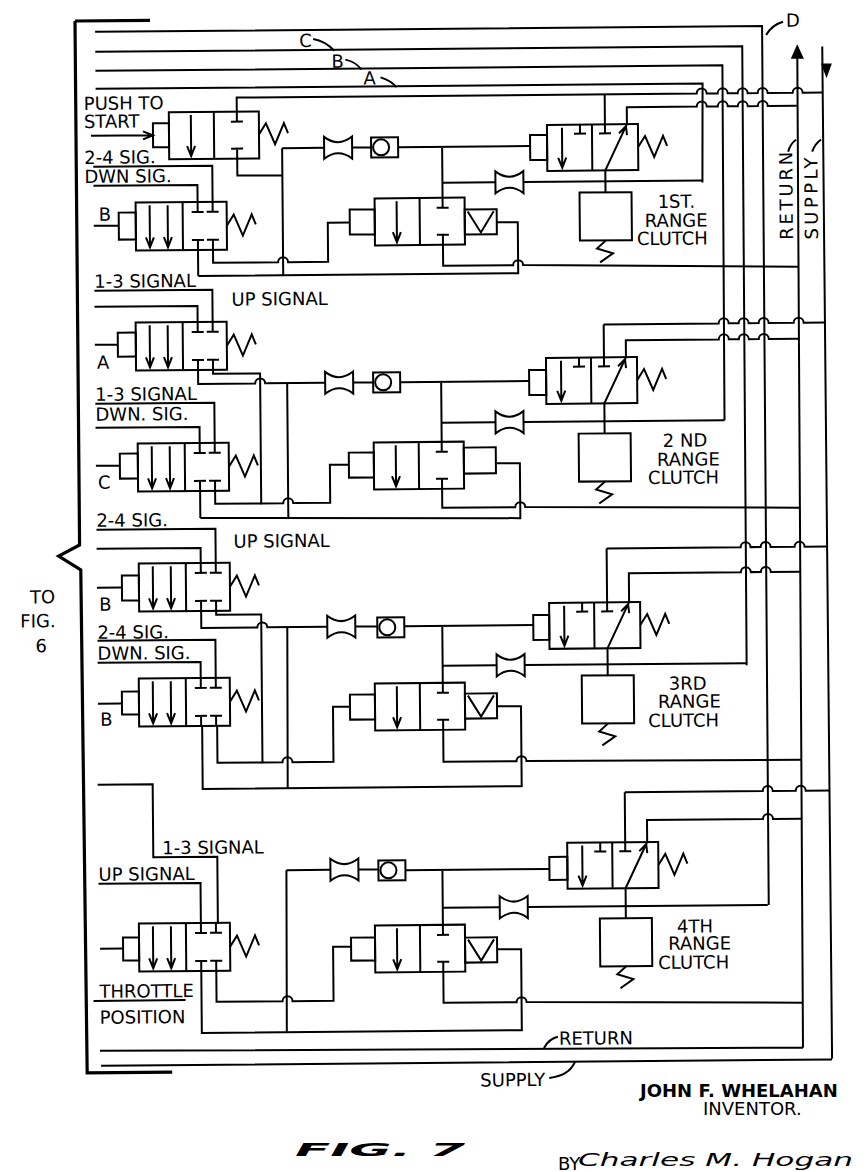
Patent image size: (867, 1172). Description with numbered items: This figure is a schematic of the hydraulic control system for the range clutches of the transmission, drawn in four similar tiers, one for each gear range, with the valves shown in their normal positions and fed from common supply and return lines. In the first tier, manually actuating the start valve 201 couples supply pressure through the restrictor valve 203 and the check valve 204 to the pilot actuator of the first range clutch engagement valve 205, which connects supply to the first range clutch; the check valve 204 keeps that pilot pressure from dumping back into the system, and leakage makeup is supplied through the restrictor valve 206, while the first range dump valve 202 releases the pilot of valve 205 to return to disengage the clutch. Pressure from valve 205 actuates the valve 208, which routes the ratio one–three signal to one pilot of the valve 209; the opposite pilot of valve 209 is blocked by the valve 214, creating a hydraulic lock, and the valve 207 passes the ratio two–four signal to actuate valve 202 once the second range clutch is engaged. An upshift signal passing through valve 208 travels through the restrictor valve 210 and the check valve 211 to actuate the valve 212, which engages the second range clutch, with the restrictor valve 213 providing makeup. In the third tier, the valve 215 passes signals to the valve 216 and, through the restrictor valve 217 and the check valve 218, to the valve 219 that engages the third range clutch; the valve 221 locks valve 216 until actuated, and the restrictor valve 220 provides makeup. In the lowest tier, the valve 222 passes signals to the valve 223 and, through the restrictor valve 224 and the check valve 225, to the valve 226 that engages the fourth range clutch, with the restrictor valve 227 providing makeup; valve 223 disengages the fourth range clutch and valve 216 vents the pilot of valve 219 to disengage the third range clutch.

The start valve 201 is at (252, 113).
The first range dump valve 202 is at (386, 200).
The restrictor valve 203 is at (336, 139).
The check valve 204 is at (392, 140).
The first range clutch engagement valve 205 is at (548, 129).
The restrictor valve 206 is at (512, 197).
The valve 207 is at (155, 253).
The valve 208 is at (226, 367).
The valve 209 is at (383, 445).
The restrictor valve 210 is at (334, 374).
The check valve 211 is at (390, 375).
The valve 212 is at (548, 362).
The restrictor valve 213 is at (517, 437).
The valve 214 is at (226, 454).
The valve 215 is at (226, 604).
The valve 216 is at (391, 686).
The restrictor valve 217 is at (336, 618).
The check valve 218 is at (392, 620).
The valve 219 is at (547, 609).
The restrictor valve 220 is at (513, 680).
The valve 221 is at (143, 729).
The valve 222 is at (160, 926).
The valve 223 is at (400, 975).
The restrictor valve 224 is at (331, 861).
The check valve 225 is at (392, 863).
The valve 226 is at (561, 848).
The restrictor valve 227 is at (510, 922).